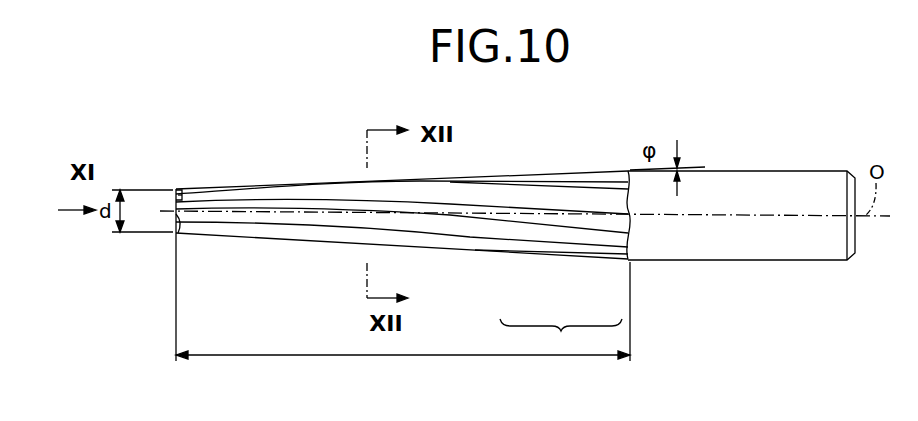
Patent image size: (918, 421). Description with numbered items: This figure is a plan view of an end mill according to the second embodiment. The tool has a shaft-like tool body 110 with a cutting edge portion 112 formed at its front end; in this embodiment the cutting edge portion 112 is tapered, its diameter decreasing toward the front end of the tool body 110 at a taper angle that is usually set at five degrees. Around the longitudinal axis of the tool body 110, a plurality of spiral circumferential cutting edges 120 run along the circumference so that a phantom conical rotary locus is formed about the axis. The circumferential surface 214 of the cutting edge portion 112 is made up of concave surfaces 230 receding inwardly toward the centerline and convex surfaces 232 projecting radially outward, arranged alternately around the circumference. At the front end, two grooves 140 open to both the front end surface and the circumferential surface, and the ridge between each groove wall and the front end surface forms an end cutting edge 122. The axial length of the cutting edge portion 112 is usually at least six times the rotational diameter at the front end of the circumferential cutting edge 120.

The tool body 110 is at (697, 189).
The cutting edge portion 112 is at (545, 185).
The spiral circumferential cutting edges 120 is at (522, 182).
The end cutting edges 122 is at (176, 216).
The grooves 140 is at (177, 188).
The circumferential surface 214 is at (403, 310).
The concave surfaces 230 is at (584, 223).
The convex surfaces 232 is at (531, 236).